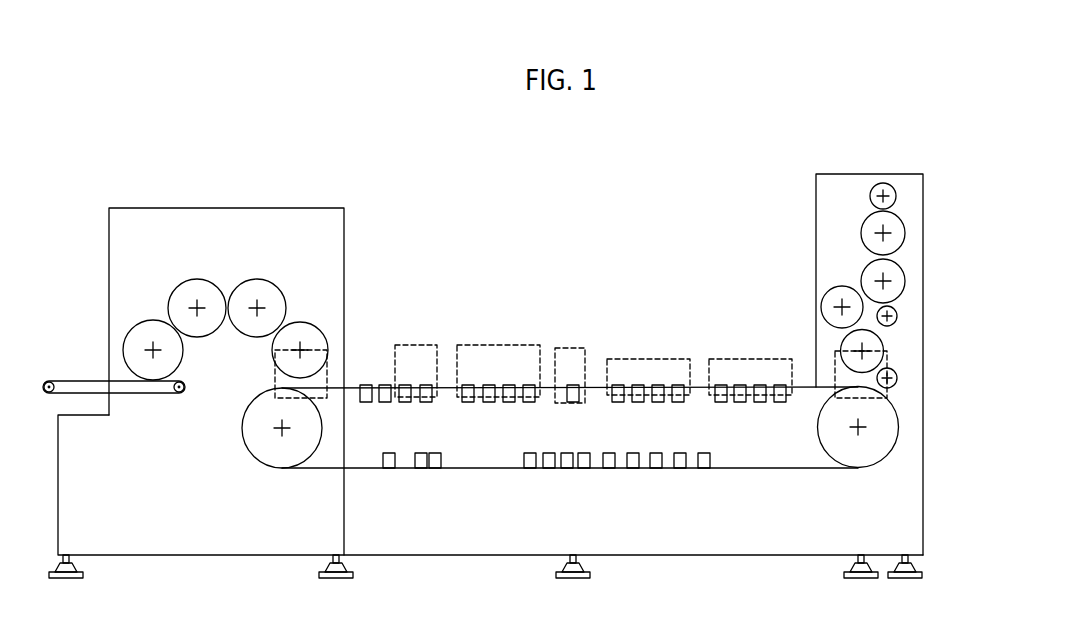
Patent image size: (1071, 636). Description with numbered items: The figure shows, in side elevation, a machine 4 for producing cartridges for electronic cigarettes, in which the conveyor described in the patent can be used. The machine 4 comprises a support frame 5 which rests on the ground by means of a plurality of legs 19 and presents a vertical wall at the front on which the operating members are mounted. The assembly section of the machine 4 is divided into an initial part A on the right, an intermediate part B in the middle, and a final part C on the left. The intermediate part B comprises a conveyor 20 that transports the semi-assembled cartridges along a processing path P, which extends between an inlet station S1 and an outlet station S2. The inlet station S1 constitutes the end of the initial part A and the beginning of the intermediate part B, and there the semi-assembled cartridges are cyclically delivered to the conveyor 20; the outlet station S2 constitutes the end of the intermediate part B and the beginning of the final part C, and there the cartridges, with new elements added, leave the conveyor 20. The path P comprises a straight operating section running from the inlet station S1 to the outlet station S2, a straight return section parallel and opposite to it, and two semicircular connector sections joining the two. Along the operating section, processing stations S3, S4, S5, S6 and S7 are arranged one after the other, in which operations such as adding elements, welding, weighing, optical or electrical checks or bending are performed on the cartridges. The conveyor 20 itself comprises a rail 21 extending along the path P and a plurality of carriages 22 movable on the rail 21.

The machine 4 is at (802, 87).
The support frame 5 is at (127, 240).
The feet 19 is at (860, 579).
The conveyor 20 is at (660, 488).
The rail 21 is at (776, 470).
The carriages 22 is at (435, 470).
The initial part A is at (868, 158).
The intermediate part B is at (583, 250).
The final part C is at (222, 184).
The processing path P is at (318, 472).
The inlet station S1 is at (836, 371).
The outlet station S2 is at (281, 380).
The processing station S3 is at (756, 352).
The processing station S4 is at (653, 351).
The processing station S5 is at (586, 335).
The processing station S6 is at (486, 331).
The station 7 S7 is at (399, 327).